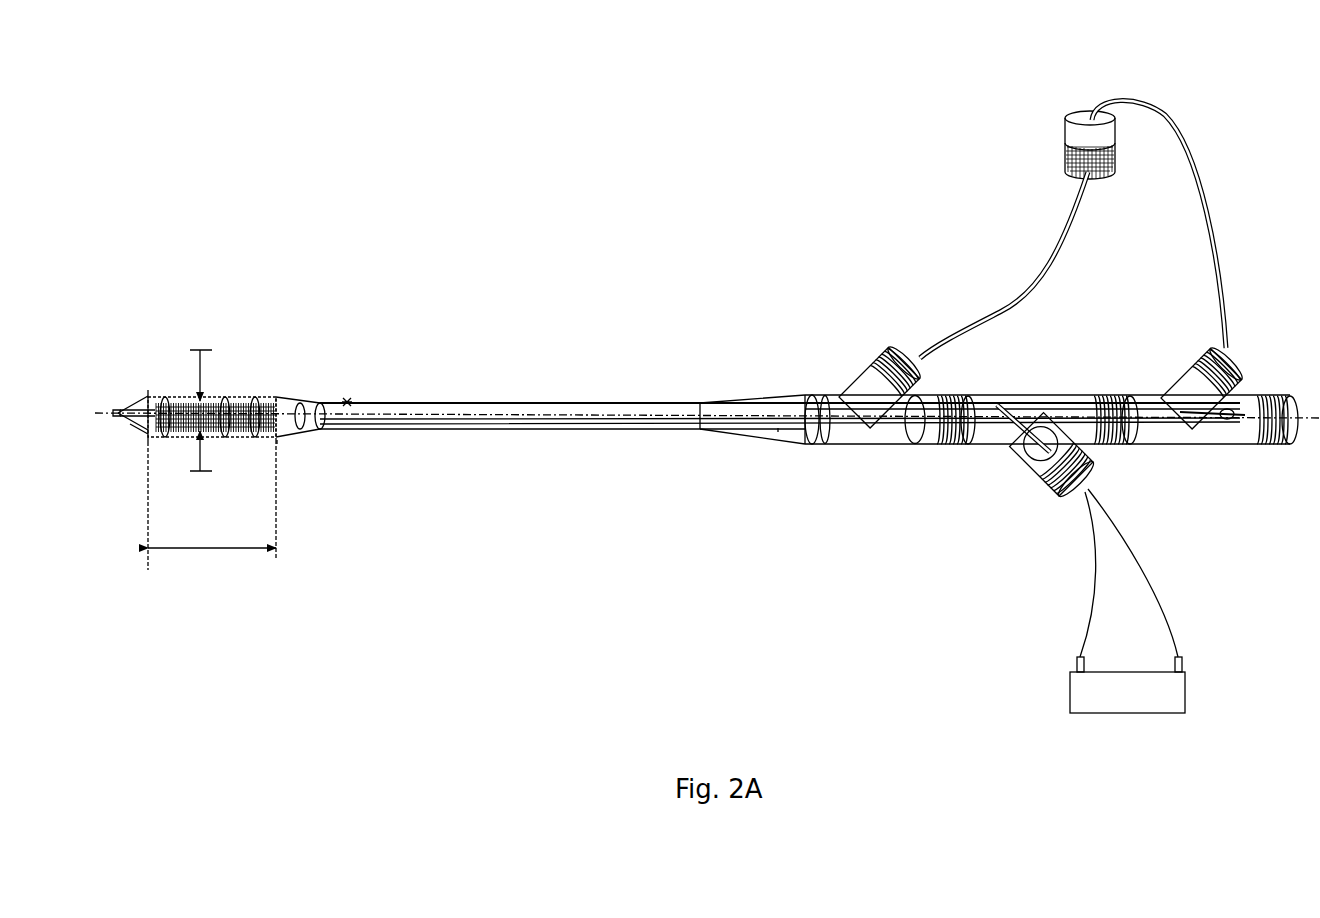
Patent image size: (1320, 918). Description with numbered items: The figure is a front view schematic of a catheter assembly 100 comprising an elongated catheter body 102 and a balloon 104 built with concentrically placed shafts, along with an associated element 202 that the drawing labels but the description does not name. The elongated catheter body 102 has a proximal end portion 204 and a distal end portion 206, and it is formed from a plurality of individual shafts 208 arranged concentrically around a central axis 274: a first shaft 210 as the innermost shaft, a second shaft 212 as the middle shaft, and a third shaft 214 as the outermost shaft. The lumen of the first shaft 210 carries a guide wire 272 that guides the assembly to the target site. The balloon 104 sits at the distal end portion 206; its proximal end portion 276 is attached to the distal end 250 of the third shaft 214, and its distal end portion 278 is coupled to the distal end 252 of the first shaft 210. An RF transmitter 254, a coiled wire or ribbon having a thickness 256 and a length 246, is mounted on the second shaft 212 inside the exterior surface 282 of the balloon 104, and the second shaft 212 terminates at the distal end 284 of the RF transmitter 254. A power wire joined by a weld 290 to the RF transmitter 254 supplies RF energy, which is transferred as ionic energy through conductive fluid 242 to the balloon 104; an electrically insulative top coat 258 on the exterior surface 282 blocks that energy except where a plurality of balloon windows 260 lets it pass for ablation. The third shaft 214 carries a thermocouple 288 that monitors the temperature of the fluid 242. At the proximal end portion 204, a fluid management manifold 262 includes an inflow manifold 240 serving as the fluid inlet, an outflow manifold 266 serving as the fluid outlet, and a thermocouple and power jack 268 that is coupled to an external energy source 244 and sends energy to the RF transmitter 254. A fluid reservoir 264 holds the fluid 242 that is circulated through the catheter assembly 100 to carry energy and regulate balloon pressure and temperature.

The catheter assembly 100 is at (214, 126).
The elongated catheter body 102 is at (536, 431).
The balloon 104 is at (150, 493).
The elongate shaft 202 is at (543, 372).
The proximal end portion 204 is at (833, 432).
The distal end portion 206 is at (135, 400).
The plurality of individual shafts 208 is at (668, 433).
The first shaft 210 is at (1163, 425).
The second shaft 212 is at (323, 403).
The third shaft 214 is at (672, 402).
The inflow manifold 240 is at (1226, 362).
The fluid 242 is at (1080, 158).
The external energy source 244 is at (1070, 682).
The length 246 is at (213, 552).
The distal end 250 is at (290, 440).
The distal end 252 is at (118, 410).
The RF transmitter 254 is at (208, 440).
The thickness 256 is at (200, 448).
The electrically insulative top coat 258 is at (237, 398).
The plurality of balloon windows 260 is at (256, 398).
The fluid management manifold 262 is at (1057, 384).
The fluid reservoir 264 is at (1072, 135).
The outflow manifold 266 is at (896, 352).
The thermocouple and power jack 268 is at (1035, 468).
The guide wire 272 is at (1236, 410).
The central axis 274 is at (1291, 442).
The proximal end portion 276 is at (304, 402).
The distal end portion 278 is at (132, 432).
The exterior surface 282 is at (288, 441).
The distal end 284 is at (150, 403).
The thermocouple 288 is at (369, 403).
The weld 290 is at (150, 444).